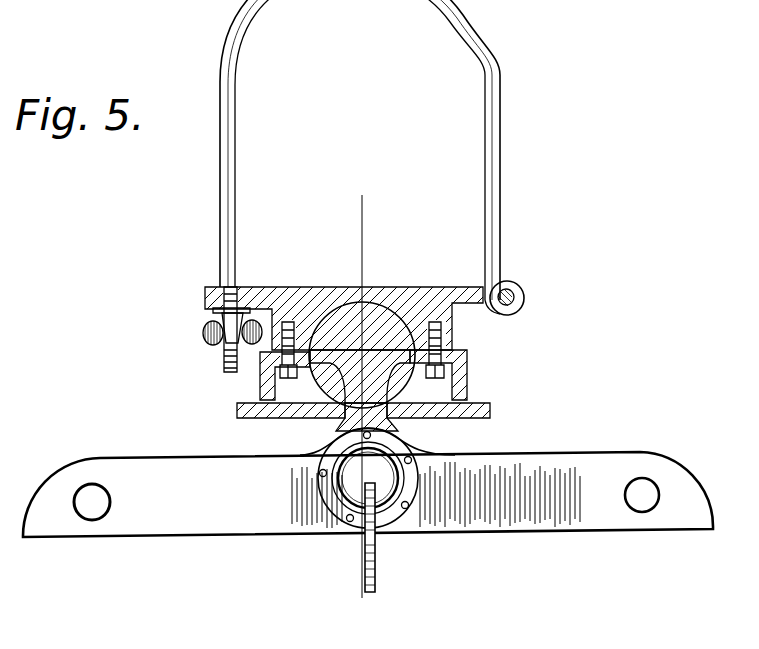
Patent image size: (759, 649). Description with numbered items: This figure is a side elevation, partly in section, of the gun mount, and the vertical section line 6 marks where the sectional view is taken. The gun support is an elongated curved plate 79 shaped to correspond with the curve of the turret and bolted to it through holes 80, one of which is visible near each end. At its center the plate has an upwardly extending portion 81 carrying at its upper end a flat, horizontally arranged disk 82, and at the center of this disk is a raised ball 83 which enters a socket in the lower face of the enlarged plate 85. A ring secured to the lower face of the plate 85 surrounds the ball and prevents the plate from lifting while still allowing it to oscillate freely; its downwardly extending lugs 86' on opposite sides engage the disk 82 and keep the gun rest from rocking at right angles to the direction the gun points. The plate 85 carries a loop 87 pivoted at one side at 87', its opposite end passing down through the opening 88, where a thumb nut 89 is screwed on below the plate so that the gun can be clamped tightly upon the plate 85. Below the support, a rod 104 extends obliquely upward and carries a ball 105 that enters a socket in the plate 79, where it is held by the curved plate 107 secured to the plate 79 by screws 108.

The section line 6- 6 is at (374, 213).
The elongated curved plate 79 is at (368, 494).
The holes 80 is at (626, 495).
The upwardly extending portion 81 is at (405, 432).
The disk 82 is at (492, 408).
The raised ball 83 is at (327, 418).
The enlarged plate 85 is at (446, 327).
The lugs 86' is at (471, 375).
The loop 87 is at (386, 150).
The pivot 87' is at (536, 296).
The opening 88 is at (240, 290).
The thumb nut 89 is at (226, 340).
The rod 104 is at (345, 524).
The ball 105 is at (348, 478).
The curved plate 107 is at (333, 472).
The screws 108 is at (414, 537).